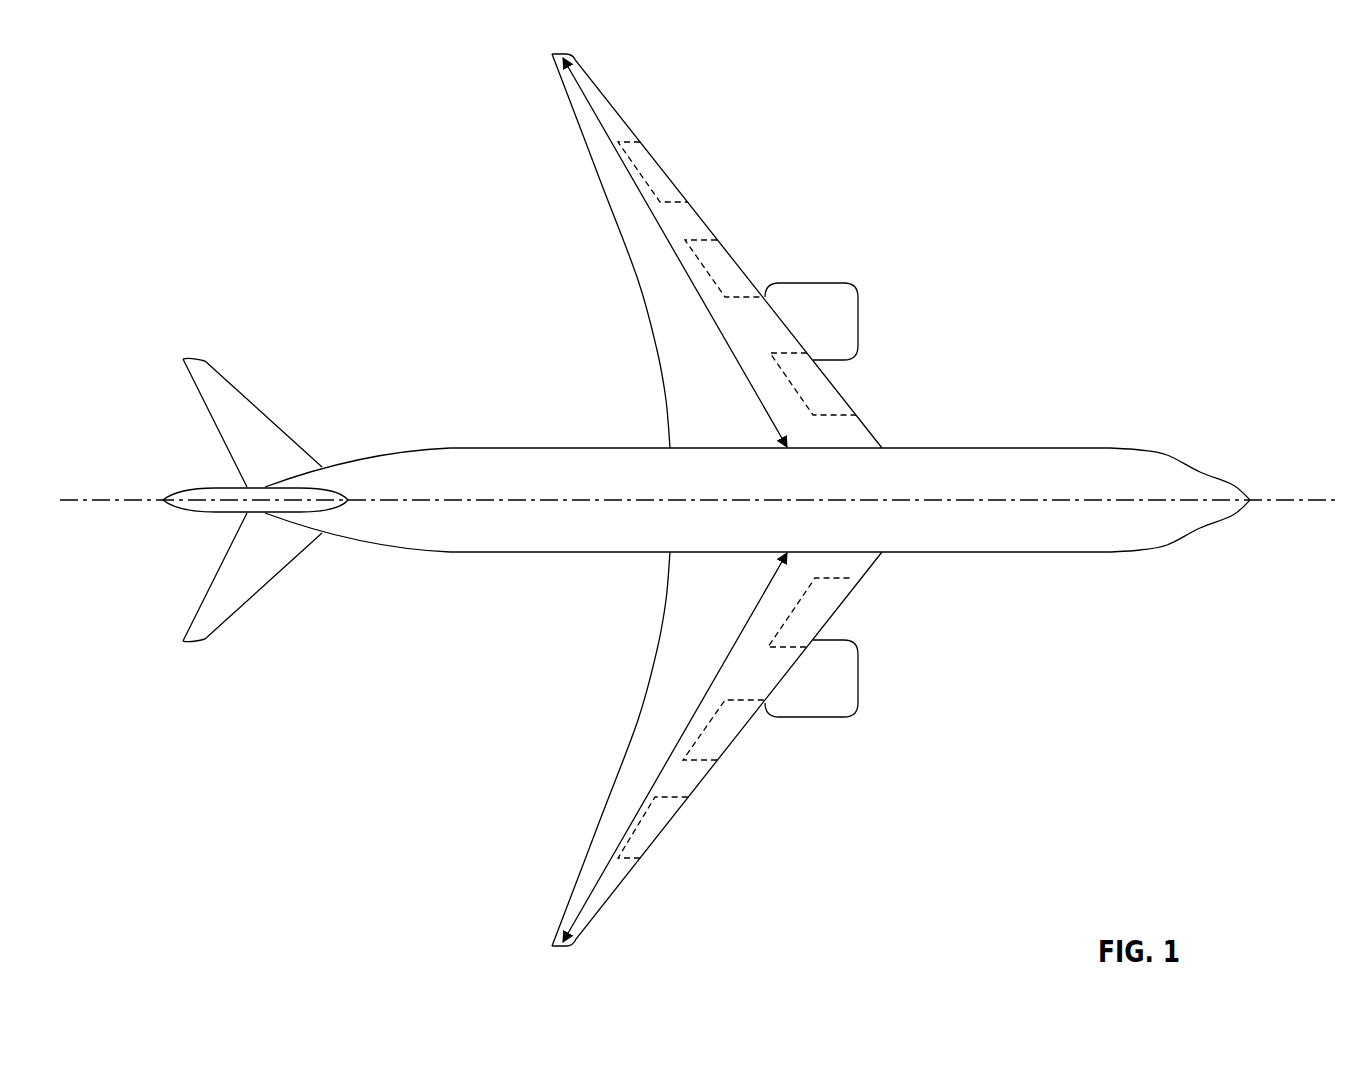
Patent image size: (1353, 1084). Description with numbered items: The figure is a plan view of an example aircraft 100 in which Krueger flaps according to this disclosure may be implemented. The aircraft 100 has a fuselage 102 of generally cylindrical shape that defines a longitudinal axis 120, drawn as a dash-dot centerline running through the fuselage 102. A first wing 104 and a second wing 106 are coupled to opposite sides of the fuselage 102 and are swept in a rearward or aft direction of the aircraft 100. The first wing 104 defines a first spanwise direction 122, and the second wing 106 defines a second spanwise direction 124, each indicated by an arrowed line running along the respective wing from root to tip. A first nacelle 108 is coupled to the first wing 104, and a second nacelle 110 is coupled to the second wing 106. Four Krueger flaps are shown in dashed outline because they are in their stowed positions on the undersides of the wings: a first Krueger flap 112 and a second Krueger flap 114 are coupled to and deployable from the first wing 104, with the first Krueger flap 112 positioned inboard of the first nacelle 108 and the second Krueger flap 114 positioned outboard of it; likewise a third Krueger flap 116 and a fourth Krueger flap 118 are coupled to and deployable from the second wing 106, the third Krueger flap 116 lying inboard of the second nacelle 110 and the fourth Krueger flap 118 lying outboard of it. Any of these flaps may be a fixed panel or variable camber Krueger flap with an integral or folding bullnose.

The aircraft 100 is at (1162, 78).
The fuselage 102 is at (1002, 447).
The first wing 104 is at (640, 292).
The second wing 106 is at (640, 707).
The first nacelle 108 is at (860, 305).
The second nacelle 110 is at (860, 688).
The first Krueger flap 112 is at (833, 403).
The second Krueger flap 114 is at (717, 257).
The third Krueger flap 116 is at (832, 595).
The fourth Krueger flap 118 is at (717, 742).
The longitudinal axis 120 is at (1291, 497).
The first spanwise direction 122 is at (590, 108).
The second spanwise direction 124 is at (590, 892).